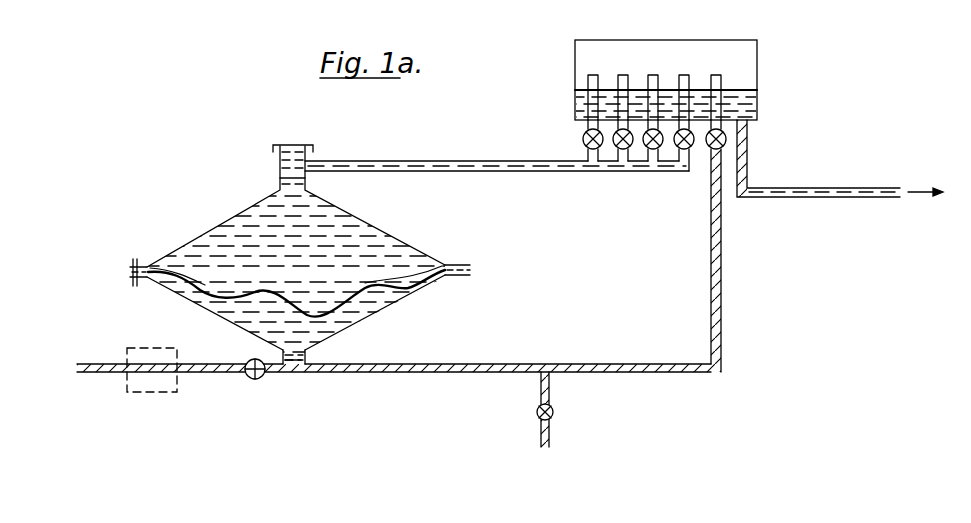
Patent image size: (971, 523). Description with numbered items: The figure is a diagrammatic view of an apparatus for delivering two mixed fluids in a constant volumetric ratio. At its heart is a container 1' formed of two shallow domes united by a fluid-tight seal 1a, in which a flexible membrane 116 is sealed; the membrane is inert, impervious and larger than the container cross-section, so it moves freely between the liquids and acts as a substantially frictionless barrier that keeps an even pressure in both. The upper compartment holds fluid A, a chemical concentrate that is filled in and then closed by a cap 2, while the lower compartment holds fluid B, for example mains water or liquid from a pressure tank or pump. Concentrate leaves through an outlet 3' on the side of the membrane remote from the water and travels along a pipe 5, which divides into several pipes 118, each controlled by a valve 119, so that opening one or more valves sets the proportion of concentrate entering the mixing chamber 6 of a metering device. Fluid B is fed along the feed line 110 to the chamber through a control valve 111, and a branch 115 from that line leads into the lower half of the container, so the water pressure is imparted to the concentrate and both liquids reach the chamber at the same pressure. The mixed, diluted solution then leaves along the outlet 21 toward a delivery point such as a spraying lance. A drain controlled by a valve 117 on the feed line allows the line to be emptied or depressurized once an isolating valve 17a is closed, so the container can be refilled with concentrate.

The mixing chamber 6 is at (600, 47).
The cap 2 is at (313, 148).
The outlet 3' is at (324, 151).
The pipe 5 is at (376, 161).
The container 1' is at (296, 248).
The fluid-tight seal 1a is at (452, 264).
The flexible membrane 116 is at (384, 284).
The fluid A is at (342, 223).
The fluid B is at (220, 306).
The branch 115 is at (306, 362).
The isolating valve 17a is at (254, 380).
The drain valve 117 is at (537, 413).
The pipes 118 is at (590, 152).
The valves 119 is at (649, 152).
The control valve 111 is at (726, 141).
The outlet 21 is at (748, 164).
The feed line 110 is at (721, 264).